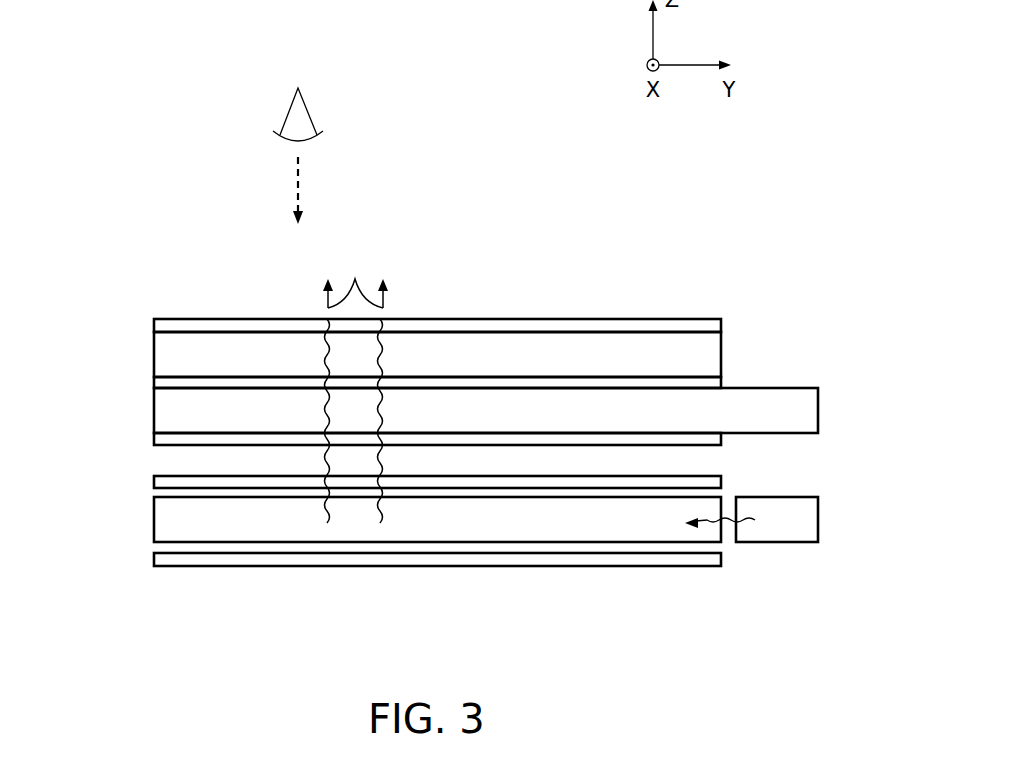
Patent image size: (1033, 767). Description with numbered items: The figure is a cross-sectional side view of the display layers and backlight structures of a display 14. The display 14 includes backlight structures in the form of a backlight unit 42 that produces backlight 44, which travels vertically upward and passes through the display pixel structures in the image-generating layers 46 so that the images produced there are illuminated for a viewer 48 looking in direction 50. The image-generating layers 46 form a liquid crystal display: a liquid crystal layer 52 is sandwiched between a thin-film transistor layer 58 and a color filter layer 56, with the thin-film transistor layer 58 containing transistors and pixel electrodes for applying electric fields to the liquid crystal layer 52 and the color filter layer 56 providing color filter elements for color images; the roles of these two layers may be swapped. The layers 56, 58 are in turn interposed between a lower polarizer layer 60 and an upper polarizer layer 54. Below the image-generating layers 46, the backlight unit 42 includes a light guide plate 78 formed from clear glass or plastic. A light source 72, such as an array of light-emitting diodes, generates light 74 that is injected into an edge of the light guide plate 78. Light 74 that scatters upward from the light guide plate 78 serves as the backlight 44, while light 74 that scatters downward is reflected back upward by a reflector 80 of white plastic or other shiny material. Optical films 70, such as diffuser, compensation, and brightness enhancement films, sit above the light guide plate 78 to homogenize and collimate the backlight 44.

The display 14 is at (622, 231).
The backlight structures 42 is at (87, 477).
The backlight 44 is at (355, 390).
The image-generating layers 46 is at (87, 320).
The viewer 48 is at (308, 113).
The direction 50 is at (300, 193).
The liquid crystal layer 52 is at (720, 382).
The upper polarizer layer 54 is at (720, 327).
The color filter layer 56 is at (720, 353).
The thin-film transistor layer 58 is at (818, 410).
The lower polarizer layer 60 is at (720, 438).
The optical films 70 is at (720, 482).
The light source 72 is at (818, 520).
The light 74 is at (743, 525).
The light guide plate 78 is at (154, 520).
The reflector 80 is at (700, 562).